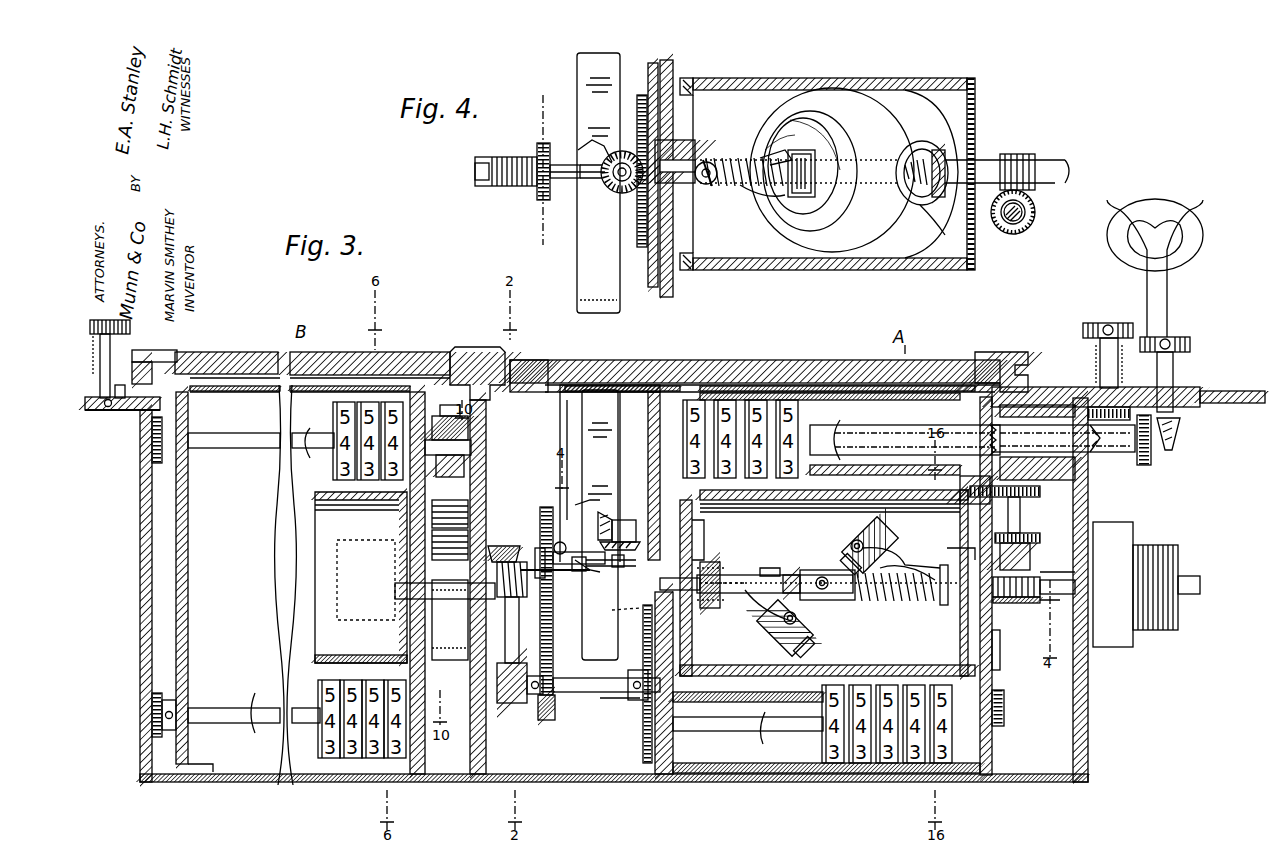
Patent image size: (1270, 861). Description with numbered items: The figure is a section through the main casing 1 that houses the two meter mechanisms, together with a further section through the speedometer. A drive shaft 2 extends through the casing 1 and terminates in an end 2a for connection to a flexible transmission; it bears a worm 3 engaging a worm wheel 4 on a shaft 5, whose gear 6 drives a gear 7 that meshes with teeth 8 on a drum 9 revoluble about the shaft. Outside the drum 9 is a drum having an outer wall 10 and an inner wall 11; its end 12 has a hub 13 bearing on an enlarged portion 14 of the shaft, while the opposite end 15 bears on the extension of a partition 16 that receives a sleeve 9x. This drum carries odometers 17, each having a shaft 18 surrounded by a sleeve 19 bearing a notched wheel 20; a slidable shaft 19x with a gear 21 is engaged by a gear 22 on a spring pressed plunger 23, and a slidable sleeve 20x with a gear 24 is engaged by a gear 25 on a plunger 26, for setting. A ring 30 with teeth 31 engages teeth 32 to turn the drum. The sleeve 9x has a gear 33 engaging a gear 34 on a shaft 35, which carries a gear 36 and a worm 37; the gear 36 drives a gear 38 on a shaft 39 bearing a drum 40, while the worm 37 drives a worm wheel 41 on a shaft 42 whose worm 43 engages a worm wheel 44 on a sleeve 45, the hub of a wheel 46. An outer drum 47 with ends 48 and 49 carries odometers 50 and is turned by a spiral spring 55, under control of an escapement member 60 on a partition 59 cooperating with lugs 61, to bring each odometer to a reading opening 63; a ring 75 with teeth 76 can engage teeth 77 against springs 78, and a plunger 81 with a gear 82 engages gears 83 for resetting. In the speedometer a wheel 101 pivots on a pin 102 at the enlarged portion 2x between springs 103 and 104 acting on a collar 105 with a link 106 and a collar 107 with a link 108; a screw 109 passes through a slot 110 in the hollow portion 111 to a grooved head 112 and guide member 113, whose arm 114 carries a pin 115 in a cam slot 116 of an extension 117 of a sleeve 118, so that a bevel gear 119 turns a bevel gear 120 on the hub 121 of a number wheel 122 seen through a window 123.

In FIG. 3, the main casing 1 is at (1088, 725).
In FIG. 4, the drive shaft 2 is at (1048, 158).
In FIG. 3, the drive shaft 2 is at (1062, 578).
In FIG. 3, the end of drive shaft 2a is at (1190, 596).
In FIG. 4, the enlarged portion of shaft 2x is at (820, 165).
In FIG. 3, the enlarged portion of shaft 2x is at (858, 602).
In FIG. 4, the worm 3 is at (1012, 154).
In FIG. 3, the worm 3 is at (1012, 598).
In FIG. 4, the worm wheel 4 is at (1035, 212).
In FIG. 3, the worm wheel 4 is at (1038, 600).
In FIG. 3, the shaft 5 is at (1030, 532).
In FIG. 3, the gear 6 is at (1010, 491).
In FIG. 3, the gear 7 is at (827, 583).
In FIG. 4, the teeth 8 is at (975, 98).
In FIG. 3, the teeth 8 is at (1000, 672).
In FIG. 3, the drum 9 is at (643, 631).
In FIG. 3, the sleeve 9x is at (617, 611).
In FIG. 3, the outer wall of drum 10 is at (803, 772).
In FIG. 3, the inner wall of drum 11 is at (745, 735).
In FIG. 3, the end of drum 12 is at (1010, 390).
In FIG. 3, the hub 13 is at (965, 552).
In FIG. 3, the enlarged portion of shaft 14 is at (960, 585).
In FIG. 3, the end of drum 15 is at (674, 749).
In FIG. 3, the partition 16 is at (648, 456).
In FIG. 3, the odometers 17 is at (745, 400).
In FIG. 3, the odometer shaft 18 is at (897, 445).
In FIG. 3, the sleeve 19 is at (865, 432).
In FIG. 3, the slidable shaft 19x is at (1105, 452).
In FIG. 3, the notched wheel 20 is at (787, 400).
In FIG. 3, the slidable sleeve 20x is at (1100, 458).
In FIG. 3, the gear 21 is at (1150, 458).
In FIG. 3, the gear 22 is at (1175, 439).
In FIG. 3, the spring pressed plunger 23 is at (1175, 380).
In FIG. 3, the gear 24 is at (1090, 400).
In FIG. 3, the gear 25 is at (1098, 365).
In FIG. 3, the spring pressed plunger 26 is at (1085, 333).
In FIG. 3, the ring 30 is at (993, 362).
In FIG. 3, the teeth 31 is at (566, 395).
In FIG. 3, the teeth 32 is at (998, 777).
In FIG. 3, the gear 33 is at (628, 628).
In FIG. 3, the gear 34 is at (642, 722).
In FIG. 4, the shaft 35 is at (555, 165).
In FIG. 3, the shaft 35 is at (602, 693).
In FIG. 4, the gear 36 is at (543, 200).
In FIG. 3, the gear 36 is at (555, 700).
In FIG. 4, the worm 37 is at (505, 186).
In FIG. 3, the worm 37 is at (525, 705).
In FIG. 4, the gear 38 is at (541, 240).
In FIG. 3, the gear 38 is at (553, 650).
In FIG. 3, the shaft 39 is at (395, 578).
In FIG. 3, the drum 40 is at (395, 524).
In FIG. 3, the worm wheel 41 is at (522, 663).
In FIG. 3, the shaft 42 is at (523, 630).
In FIG. 3, the worm 43 is at (512, 565).
In FIG. 3, the worm wheel 44 is at (519, 591).
In FIG. 3, the sleeve 45 is at (398, 590).
In FIG. 3, the wheel 46 is at (466, 466).
In FIG. 3, the outer drum 47 is at (265, 432).
In FIG. 3, the drum end 48 is at (400, 652).
In FIG. 3, the drum end 49 is at (190, 645).
In FIG. 3, the odometers 50 is at (325, 418).
In FIG. 3, the spiral spring 55 is at (468, 534).
In FIG. 3, the partition 59 is at (470, 428).
In FIG. 3, the escapement member 60 is at (470, 486).
In FIG. 3, the lugs 61 is at (466, 680).
In FIG. 3, the reading opening 63 is at (352, 360).
In FIG. 3, the ring 75 is at (470, 352).
In FIG. 3, the teeth 76 is at (200, 392).
In FIG. 3, the teeth 77 is at (484, 358).
In FIG. 3, the springs 78 is at (520, 380).
In FIG. 3, the spring pressed plunger 81 is at (112, 345).
In FIG. 3, the gear 82 is at (122, 412).
In FIG. 3, the gears 83 is at (156, 440).
In FIG. 4, the wheel 101 is at (860, 128).
In FIG. 3, the wheel 101 is at (850, 545).
In FIG. 3, the pivot pin 102 is at (818, 580).
In FIG. 4, the spring 103 is at (910, 200).
In FIG. 3, the spring 103 is at (907, 552).
In FIG. 4, the spring 104 is at (757, 192).
In FIG. 3, the spring 104 is at (792, 573).
In FIG. 4, the slidable collar 105 is at (940, 195).
In FIG. 3, the slidable collar 105 is at (915, 597).
In FIG. 4, the link 106 is at (911, 230).
In FIG. 3, the link 106 is at (872, 545).
In FIG. 4, the collar 107 is at (735, 160).
In FIG. 3, the collar 107 is at (712, 573).
In FIG. 4, the link 108 is at (770, 152).
In FIG. 3, the link 108 is at (770, 638).
In FIG. 4, the adjustable screw 109 is at (720, 190).
In FIG. 3, the adjustable screw 109 is at (717, 575).
In FIG. 4, the slot 110 is at (800, 152).
In FIG. 3, the slot 110 is at (748, 573).
In FIG. 3, the hollow portion of shaft 111 is at (765, 575).
In FIG. 3, the grooved head 112 is at (703, 614).
In FIG. 4, the guide member 113 is at (706, 160).
In FIG. 3, the guide member 113 is at (708, 606).
In FIG. 4, the arm 114 is at (582, 180).
In FIG. 3, the arm 114 is at (585, 568).
In FIG. 4, the pin 115 is at (585, 147).
In FIG. 3, the pin 115 is at (576, 566).
In FIG. 4, the cam slot 116 is at (600, 163).
In FIG. 3, the cam slot 116 is at (576, 561).
In FIG. 4, the extension 117 is at (640, 100).
In FIG. 3, the extension 117 is at (560, 592).
In FIG. 3, the sleeve 118 is at (611, 561).
In FIG. 4, the bevel gear 119 is at (640, 210).
In FIG. 3, the bevel gear 119 is at (618, 538).
In FIG. 4, the bevel gear 120 is at (632, 195).
In FIG. 3, the bevel gear 120 is at (605, 520).
In FIG. 4, the hub 121 is at (635, 185).
In FIG. 3, the hub 121 is at (575, 503).
In FIG. 4, the number wheel 122 is at (598, 182).
In FIG. 3, the number wheel 122 is at (581, 445).
In FIG. 3, the window 123 is at (598, 380).